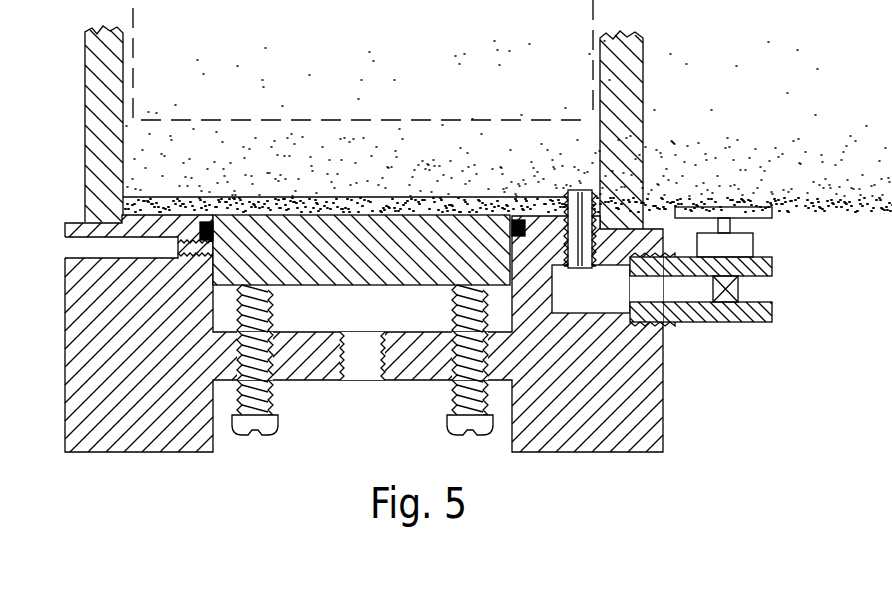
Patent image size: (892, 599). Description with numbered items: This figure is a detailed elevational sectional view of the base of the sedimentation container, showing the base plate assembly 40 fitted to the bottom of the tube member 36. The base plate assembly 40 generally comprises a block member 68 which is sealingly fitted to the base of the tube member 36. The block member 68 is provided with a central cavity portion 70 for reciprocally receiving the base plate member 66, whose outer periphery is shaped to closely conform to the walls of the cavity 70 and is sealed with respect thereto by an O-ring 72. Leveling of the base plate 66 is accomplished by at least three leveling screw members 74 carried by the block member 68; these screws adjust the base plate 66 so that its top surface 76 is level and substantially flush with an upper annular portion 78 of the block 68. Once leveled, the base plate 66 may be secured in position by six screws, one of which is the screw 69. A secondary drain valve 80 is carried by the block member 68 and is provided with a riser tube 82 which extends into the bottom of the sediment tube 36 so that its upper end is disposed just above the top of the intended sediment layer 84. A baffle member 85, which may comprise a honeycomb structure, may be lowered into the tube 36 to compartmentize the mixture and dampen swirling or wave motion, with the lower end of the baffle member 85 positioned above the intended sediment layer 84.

The tube member 36 is at (100, 128).
The base plate assembly 40 is at (70, 216).
The base plate member 66 is at (385, 287).
The block member 68 is at (85, 441).
The screw 69 is at (178, 246).
The central cavity portion 70 is at (213, 314).
The O-ring 72 is at (591, 289).
The leveling screw members 74 is at (278, 428).
The top surface 76 is at (463, 198).
The upper annular portion 78 is at (150, 214).
The secondary drain valve 80 is at (748, 249).
The riser tube 82 is at (588, 247).
The intended sediment layer 84 is at (538, 197).
The baffle member 85 is at (596, 15).